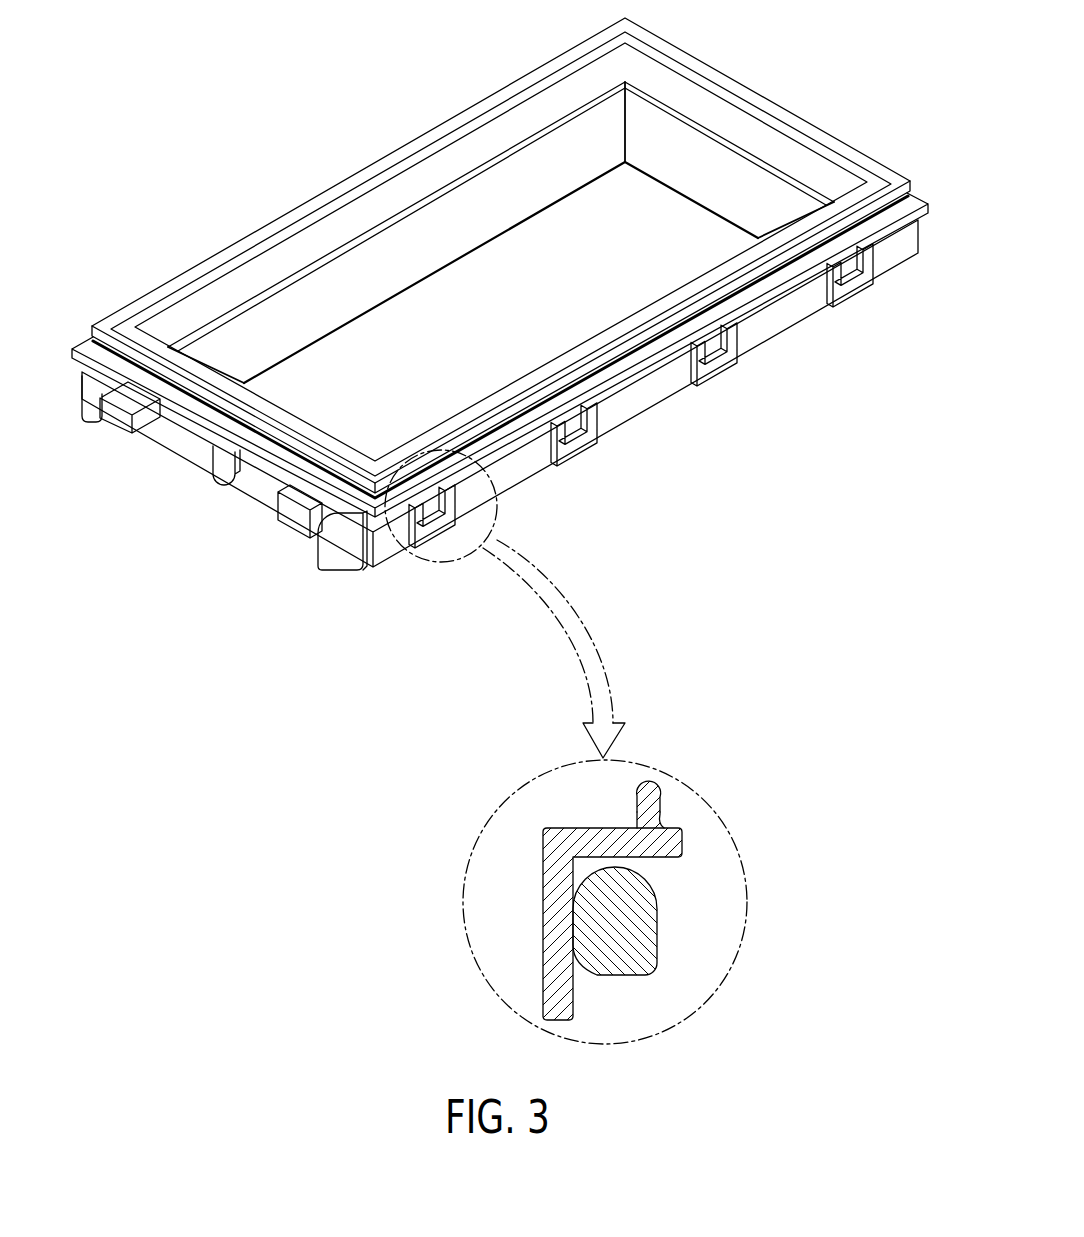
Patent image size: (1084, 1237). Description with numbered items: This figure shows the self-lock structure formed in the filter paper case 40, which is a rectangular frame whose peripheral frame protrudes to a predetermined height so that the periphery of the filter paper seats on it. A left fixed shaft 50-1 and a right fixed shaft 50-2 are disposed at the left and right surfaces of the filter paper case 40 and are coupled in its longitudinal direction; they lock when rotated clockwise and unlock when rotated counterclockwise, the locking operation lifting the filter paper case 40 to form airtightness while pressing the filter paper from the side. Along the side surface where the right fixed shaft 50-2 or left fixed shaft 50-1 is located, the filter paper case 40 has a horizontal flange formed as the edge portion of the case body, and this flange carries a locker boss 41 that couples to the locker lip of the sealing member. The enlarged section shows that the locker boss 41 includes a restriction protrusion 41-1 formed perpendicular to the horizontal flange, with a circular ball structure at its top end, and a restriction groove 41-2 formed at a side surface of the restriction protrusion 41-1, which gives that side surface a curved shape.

The filter paper case 40 is at (748, 183).
The locker boss 41 is at (433, 535).
The restriction protrusion 41-1 is at (650, 782).
The restriction groove 41-2 is at (657, 820).
The left fixed shaft 50-1 is at (120, 418).
The right fixed shaft 50-2 is at (293, 521).